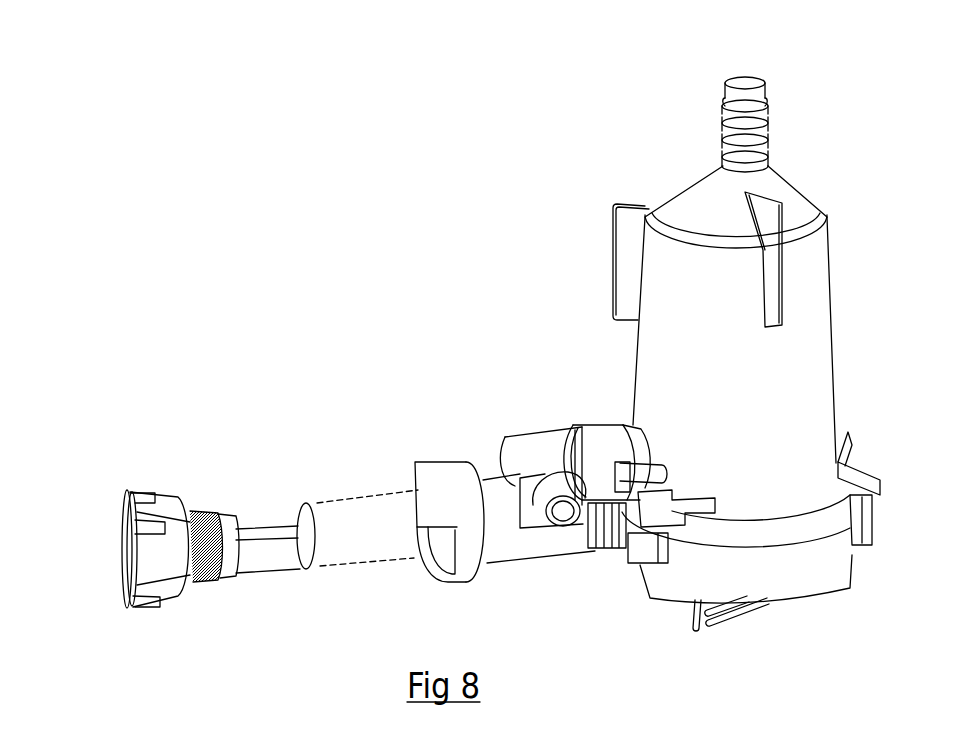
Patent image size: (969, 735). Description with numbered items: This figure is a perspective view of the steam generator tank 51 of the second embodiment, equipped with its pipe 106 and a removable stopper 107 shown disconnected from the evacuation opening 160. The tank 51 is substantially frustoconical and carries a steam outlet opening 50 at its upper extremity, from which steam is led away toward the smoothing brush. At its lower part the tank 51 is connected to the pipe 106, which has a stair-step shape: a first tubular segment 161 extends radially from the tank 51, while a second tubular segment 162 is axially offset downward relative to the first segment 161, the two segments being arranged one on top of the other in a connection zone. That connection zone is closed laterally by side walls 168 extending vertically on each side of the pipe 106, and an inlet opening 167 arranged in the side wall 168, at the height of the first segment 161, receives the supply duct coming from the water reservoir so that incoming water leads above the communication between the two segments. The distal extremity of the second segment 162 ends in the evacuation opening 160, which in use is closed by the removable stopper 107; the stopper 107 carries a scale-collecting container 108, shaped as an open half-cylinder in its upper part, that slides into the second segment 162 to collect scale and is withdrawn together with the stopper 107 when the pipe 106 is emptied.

The steam outlet opening 50 is at (748, 80).
The tank 51 is at (641, 378).
The pipe 106 is at (535, 555).
The removable stopper 107 is at (120, 553).
The scale-collecting container 108 is at (268, 572).
The evacuation opening 160 is at (443, 543).
The first tubular segment 161 is at (535, 438).
The second tubular segment 162 is at (507, 558).
The inlet opening 167 is at (563, 512).
The side walls 168 is at (523, 495).